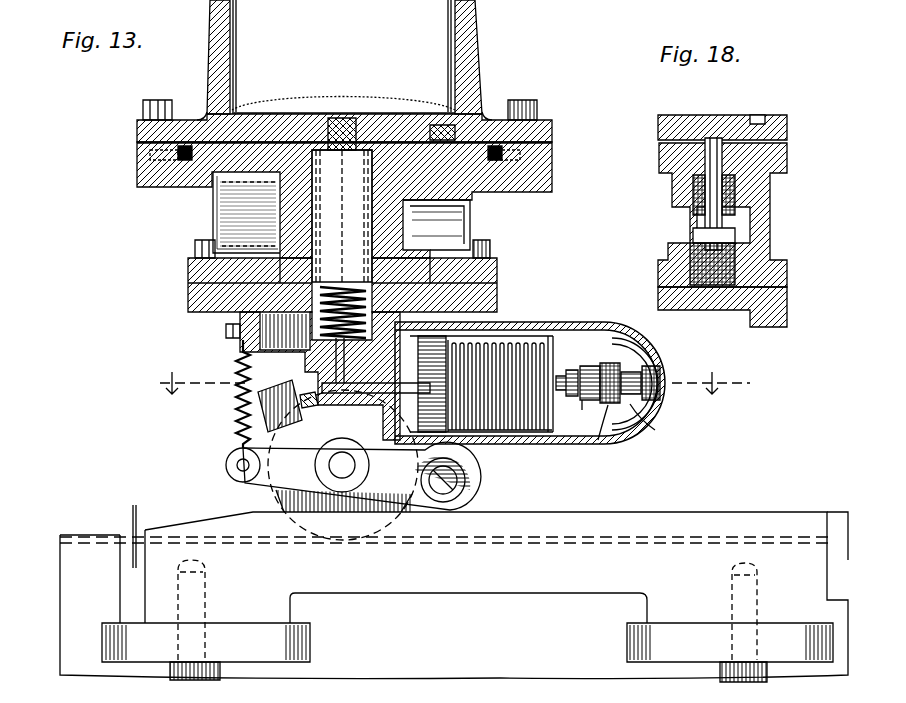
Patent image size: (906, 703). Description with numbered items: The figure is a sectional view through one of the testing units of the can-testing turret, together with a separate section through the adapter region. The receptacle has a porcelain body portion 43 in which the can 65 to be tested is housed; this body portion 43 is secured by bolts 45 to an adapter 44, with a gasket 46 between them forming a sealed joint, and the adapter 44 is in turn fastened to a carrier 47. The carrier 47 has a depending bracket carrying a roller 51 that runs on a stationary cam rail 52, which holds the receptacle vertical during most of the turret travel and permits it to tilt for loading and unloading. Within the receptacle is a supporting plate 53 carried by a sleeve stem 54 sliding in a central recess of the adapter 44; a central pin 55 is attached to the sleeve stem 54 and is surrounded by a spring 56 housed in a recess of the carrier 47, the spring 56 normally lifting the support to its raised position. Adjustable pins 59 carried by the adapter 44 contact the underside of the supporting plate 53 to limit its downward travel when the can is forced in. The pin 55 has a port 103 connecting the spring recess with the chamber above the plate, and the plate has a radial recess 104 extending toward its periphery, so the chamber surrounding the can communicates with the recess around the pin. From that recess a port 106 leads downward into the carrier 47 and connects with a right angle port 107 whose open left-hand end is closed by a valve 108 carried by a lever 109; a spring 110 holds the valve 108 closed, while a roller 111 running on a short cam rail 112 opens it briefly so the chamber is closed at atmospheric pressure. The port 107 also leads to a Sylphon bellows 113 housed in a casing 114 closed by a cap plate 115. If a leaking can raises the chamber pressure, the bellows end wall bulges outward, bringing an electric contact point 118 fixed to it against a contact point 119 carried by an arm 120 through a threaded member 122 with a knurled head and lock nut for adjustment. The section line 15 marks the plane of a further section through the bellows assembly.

In FIG. 13, the can 65 is at (344, 60).
In FIG. 13, the radial recess 104 is at (340, 118).
In FIG. 13, the port 103 is at (348, 124).
In FIG. 13, the body portion 43 is at (482, 36).
In FIG. 13, the bolts 45 is at (521, 105).
In FIG. 13, the supporting plate 53 is at (444, 134).
In FIG. 18, the supporting plate 53 is at (722, 128).
In FIG. 13, the adapter 44 is at (137, 186).
In FIG. 18, the adapter 44 is at (764, 230).
In FIG. 13, the gasket 46 is at (178, 155).
In FIG. 13, the central pin 55 is at (240, 186).
In FIG. 13, the sleeve stem 54 is at (343, 208).
In FIG. 13, the spring 56 is at (412, 246).
In FIG. 13, the carrier 47 is at (497, 286).
In FIG. 18, the carrier 47 is at (768, 298).
In FIG. 13, the port 106 is at (340, 350).
In FIG. 13, the spring 110 is at (237, 368).
In FIG. 13, the valve 108 is at (258, 402).
In FIG. 13, the right angle port 107 is at (368, 446).
In FIG. 13, the lever 109 is at (268, 470).
In FIG. 13, the roller 111 is at (444, 504).
In FIG. 13, the roller 51 is at (376, 516).
In FIG. 13, the cap plate 115 is at (660, 366).
In FIG. 13, the casing 114 is at (524, 446).
In FIG. 13, the Sylphon bellows 113 is at (492, 360).
In FIG. 13, the electric contact point 118 is at (568, 378).
In FIG. 13, the contact point 119 is at (580, 402).
In FIG. 13, the arm 120 is at (600, 424).
In FIG. 13, the threaded member 122 is at (648, 424).
In FIG. 13, the section line 15 is at (440, 384).
In FIG. 13, the cam rail 52 is at (601, 538).
In FIG. 13, the cam rail 112 is at (134, 568).
In FIG. 18, the adjustable pins 59 is at (706, 170).